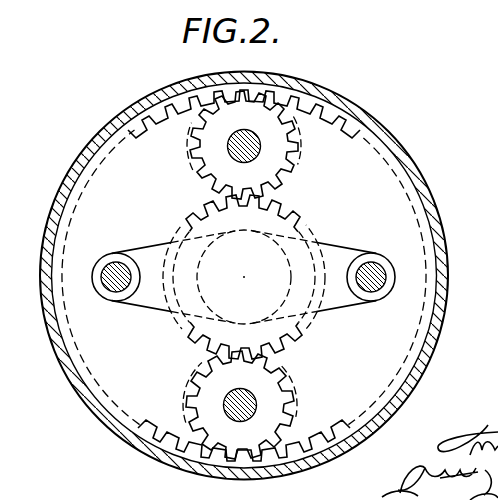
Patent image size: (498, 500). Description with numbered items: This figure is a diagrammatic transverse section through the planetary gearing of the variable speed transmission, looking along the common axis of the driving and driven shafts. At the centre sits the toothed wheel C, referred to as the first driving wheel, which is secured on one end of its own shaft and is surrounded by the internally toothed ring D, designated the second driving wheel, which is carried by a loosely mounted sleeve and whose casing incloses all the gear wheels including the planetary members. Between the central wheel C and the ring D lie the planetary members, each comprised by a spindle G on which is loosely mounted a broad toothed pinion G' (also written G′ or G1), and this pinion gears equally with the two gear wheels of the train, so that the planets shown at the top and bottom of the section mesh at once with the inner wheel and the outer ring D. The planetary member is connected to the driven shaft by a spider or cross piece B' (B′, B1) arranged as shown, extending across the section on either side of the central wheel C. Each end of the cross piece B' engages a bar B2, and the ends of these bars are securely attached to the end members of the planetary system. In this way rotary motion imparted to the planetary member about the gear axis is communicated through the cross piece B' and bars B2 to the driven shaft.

The internally toothed ring D is at (71, 165).
The toothed wheel C is at (305, 221).
The spindle G is at (258, 275).
The broad toothed pinion G' is at (224, 270).
The broad toothed pinion G′ is at (224, 270).
The broad toothed pinion G1 is at (224, 270).
The spider or cross piece B' is at (245, 274).
The spider or cross piece B′ is at (245, 274).
The spider or cross piece B1 is at (245, 274).
The bar B2 is at (369, 292).